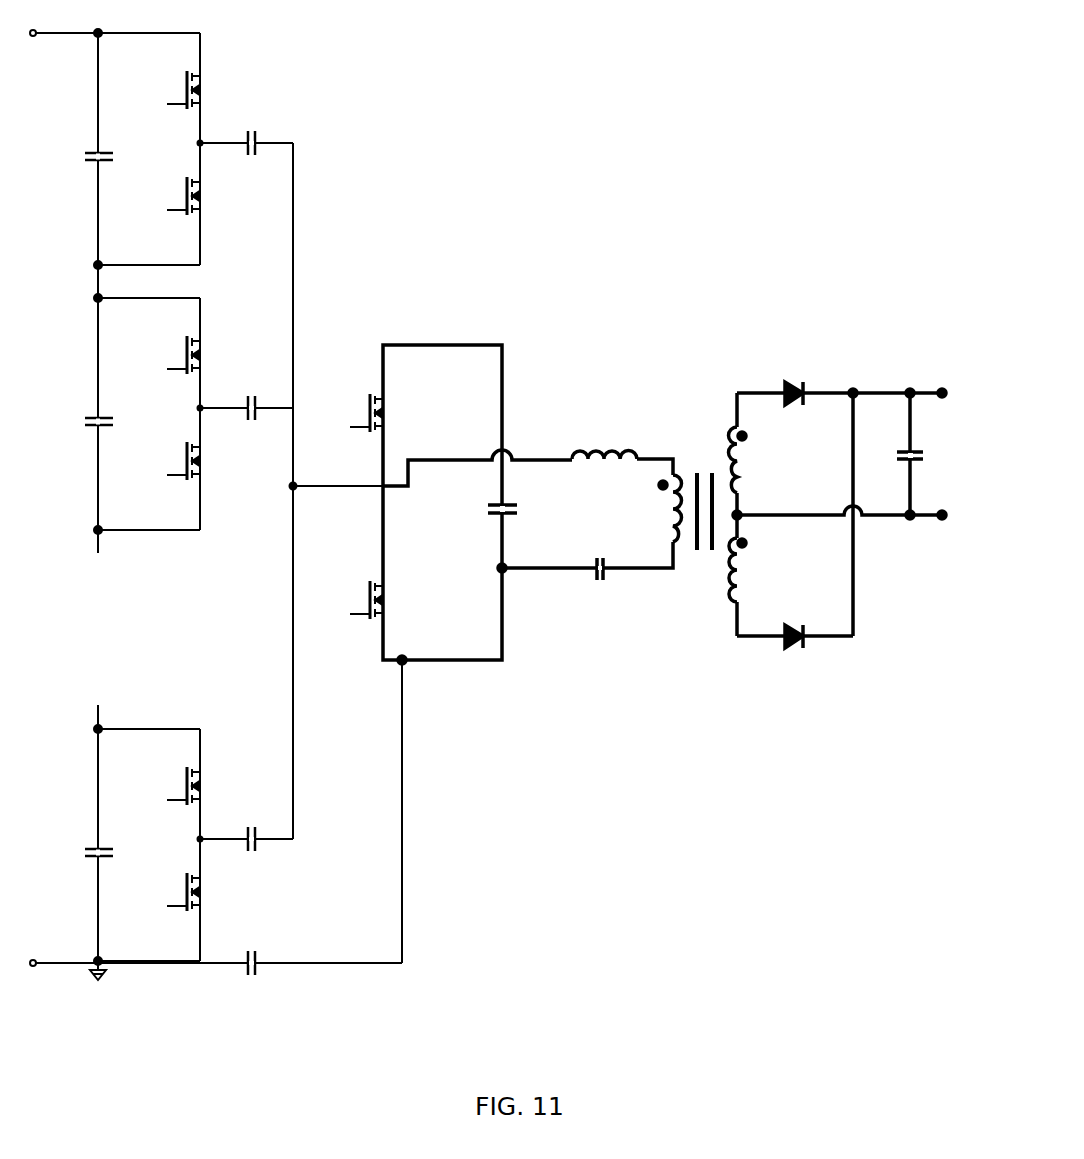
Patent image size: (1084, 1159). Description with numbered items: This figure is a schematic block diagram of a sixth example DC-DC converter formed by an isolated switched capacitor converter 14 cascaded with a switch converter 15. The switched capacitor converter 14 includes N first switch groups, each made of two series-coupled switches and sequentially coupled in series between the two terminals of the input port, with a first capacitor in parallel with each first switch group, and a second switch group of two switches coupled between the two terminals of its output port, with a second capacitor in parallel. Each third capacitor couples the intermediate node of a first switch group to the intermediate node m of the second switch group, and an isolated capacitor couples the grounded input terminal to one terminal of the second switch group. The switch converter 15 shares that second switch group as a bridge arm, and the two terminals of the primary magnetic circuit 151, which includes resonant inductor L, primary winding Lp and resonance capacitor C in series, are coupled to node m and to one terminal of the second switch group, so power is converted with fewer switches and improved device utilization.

The isolated switched capacitor converter 14 is at (357, 242).
The switch converter 15 is at (667, 422).
The primary magnetic circuit 151 is at (637, 627).